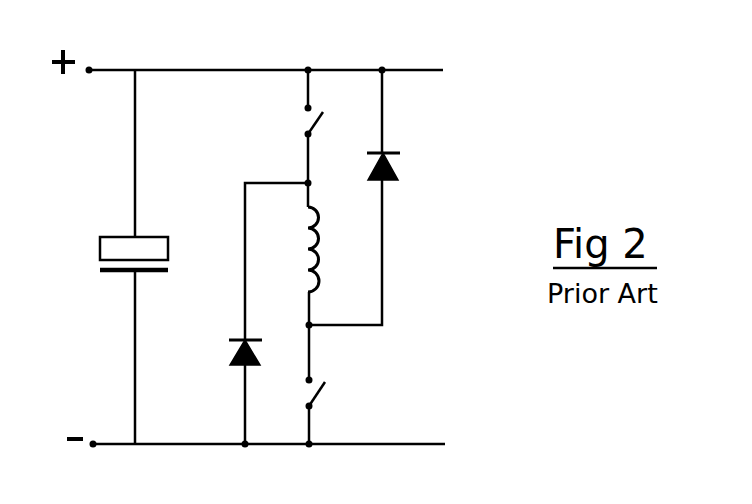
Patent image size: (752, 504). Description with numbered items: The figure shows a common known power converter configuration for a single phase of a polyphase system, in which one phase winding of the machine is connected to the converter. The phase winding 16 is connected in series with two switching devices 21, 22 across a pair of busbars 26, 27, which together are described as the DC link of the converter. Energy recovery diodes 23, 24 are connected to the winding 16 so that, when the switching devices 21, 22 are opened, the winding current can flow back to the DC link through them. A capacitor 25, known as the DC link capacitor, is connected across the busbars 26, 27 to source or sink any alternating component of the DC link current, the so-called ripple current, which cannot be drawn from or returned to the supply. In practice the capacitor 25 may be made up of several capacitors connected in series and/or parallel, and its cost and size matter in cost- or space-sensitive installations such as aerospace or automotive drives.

The phase winding 16 is at (327, 230).
The switching device 21 is at (304, 123).
The switching device 22 is at (325, 393).
The energy recovery diode 23 is at (403, 162).
The energy recovery diode 24 is at (230, 347).
The capacitor 25 is at (97, 261).
The busbar 26 is at (217, 70).
The busbar 27 is at (198, 444).